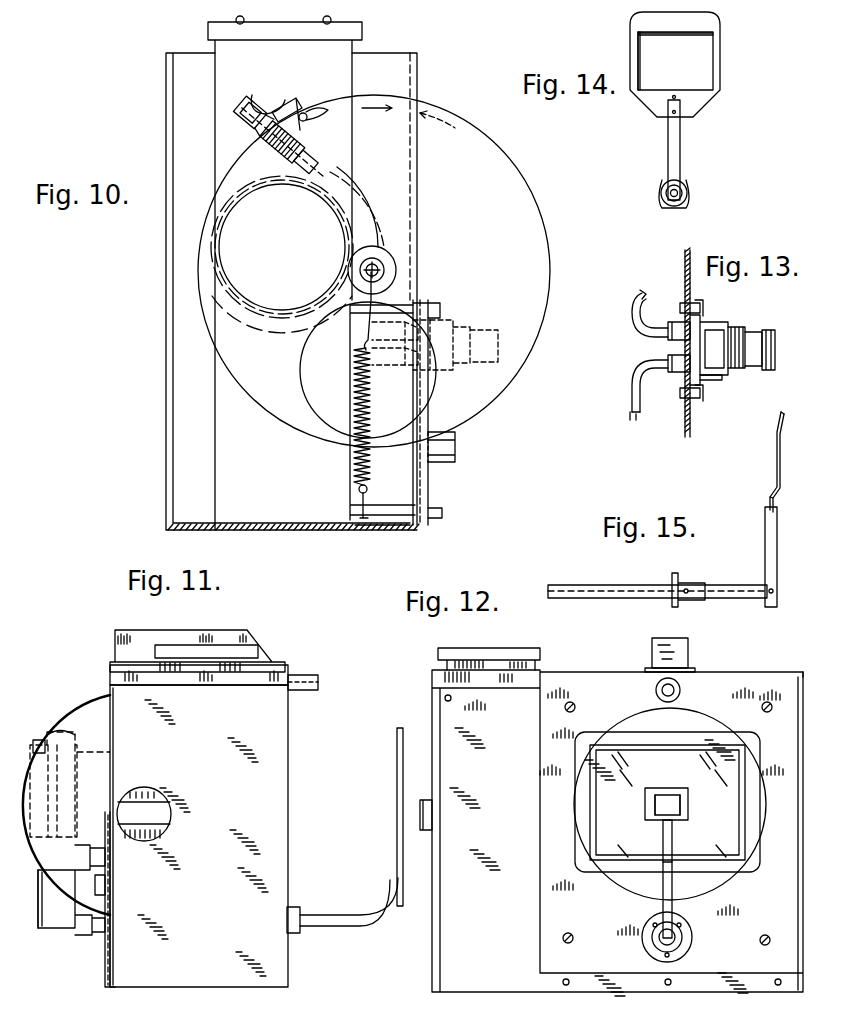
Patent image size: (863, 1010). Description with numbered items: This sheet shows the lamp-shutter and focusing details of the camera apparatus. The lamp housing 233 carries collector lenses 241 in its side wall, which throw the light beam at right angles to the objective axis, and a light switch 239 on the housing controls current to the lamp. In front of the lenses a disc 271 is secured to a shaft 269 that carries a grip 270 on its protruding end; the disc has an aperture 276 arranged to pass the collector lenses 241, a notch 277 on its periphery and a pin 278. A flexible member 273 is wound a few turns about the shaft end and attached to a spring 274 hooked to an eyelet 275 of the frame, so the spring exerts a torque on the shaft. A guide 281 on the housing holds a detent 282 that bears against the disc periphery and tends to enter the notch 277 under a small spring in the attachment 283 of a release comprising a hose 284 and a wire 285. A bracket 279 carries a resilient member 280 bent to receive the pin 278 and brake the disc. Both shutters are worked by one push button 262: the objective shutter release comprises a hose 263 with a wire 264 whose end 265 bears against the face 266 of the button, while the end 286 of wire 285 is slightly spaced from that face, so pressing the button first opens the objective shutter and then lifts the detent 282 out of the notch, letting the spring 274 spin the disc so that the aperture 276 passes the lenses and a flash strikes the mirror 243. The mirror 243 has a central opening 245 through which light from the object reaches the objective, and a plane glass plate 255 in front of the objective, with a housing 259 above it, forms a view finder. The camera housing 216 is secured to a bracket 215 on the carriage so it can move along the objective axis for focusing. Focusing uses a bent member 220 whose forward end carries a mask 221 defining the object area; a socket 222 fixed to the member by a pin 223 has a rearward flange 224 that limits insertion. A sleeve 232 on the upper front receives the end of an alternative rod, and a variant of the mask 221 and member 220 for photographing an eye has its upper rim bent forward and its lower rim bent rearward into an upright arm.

In FIG. 10, the lamp housing 233 is at (228, 62).
In FIG. 10, the guide 281 is at (252, 116).
In FIG. 10, the detent 282 is at (238, 140).
In FIG. 10, the notch 277 is at (262, 112).
In FIG. 10, the bracket 279 is at (292, 104).
In FIG. 10, the pin 278 is at (306, 110).
In FIG. 10, the resilient member 280 is at (328, 123).
In FIG. 10, the attachment 283 is at (330, 165).
In FIG. 10, the hose 284 is at (366, 212).
In FIG. 13, the hose 284 is at (640, 331).
In FIG. 10, the disc 271 is at (540, 222).
In FIG. 10, the collector lenses 241 is at (235, 240).
In FIG. 10, the flexible member 273 is at (352, 295).
In FIG. 10, the shaft 269 is at (386, 270).
In FIG. 10, the push button 262 is at (497, 318).
In FIG. 13, the push button 262 is at (770, 347).
In FIG. 11, the push button 262 is at (52, 905).
In FIG. 10, the hose 263 is at (395, 362).
In FIG. 10, the aperture 276 is at (322, 394).
In FIG. 10, the spring 274 is at (354, 474).
In FIG. 10, the eyelet 275 is at (368, 500).
In FIG. 10, the light switch 239 is at (450, 460).
In FIG. 14, the socket 222 is at (712, 24).
In FIG. 15, the socket 222 is at (783, 412).
In FIG. 11, the socket 222 is at (305, 918).
In FIG. 14, the mask 221 is at (718, 64).
In FIG. 15, the mask 221 is at (779, 445).
In FIG. 11, the mask 221 is at (397, 766).
In FIG. 12, the mask 221 is at (762, 746).
In FIG. 14, the rearward flange 224 is at (680, 148).
In FIG. 15, the rearward flange 224 is at (776, 523).
In FIG. 15, the pin 223 is at (776, 497).
In FIG. 15, the bent member 220 is at (632, 595).
In FIG. 11, the bent member 220 is at (365, 928).
In FIG. 12, the bent member 220 is at (677, 912).
In FIG. 13, the wire 285 is at (644, 296).
In FIG. 13, the wire end 286 is at (708, 330).
In FIG. 13, the face 266 is at (740, 338).
In FIG. 13, the wire end 265 is at (715, 378).
In FIG. 13, the wire 264 is at (637, 415).
In FIG. 11, the housing 259 is at (208, 637).
In FIG. 12, the housing 259 is at (690, 653).
In FIG. 11, the sleeve 232 is at (316, 680).
In FIG. 12, the sleeve 232 is at (682, 690).
In FIG. 11, the camera housing 216 is at (76, 725).
In FIG. 11, the grip 270 is at (168, 813).
In FIG. 12, the grip 270 is at (434, 813).
In FIG. 11, the bracket 215 is at (72, 930).
In FIG. 12, the mirror 243 is at (620, 752).
In FIG. 12, the central opening 245 is at (668, 790).
In FIG. 12, the plane glass plate 255 is at (690, 808).